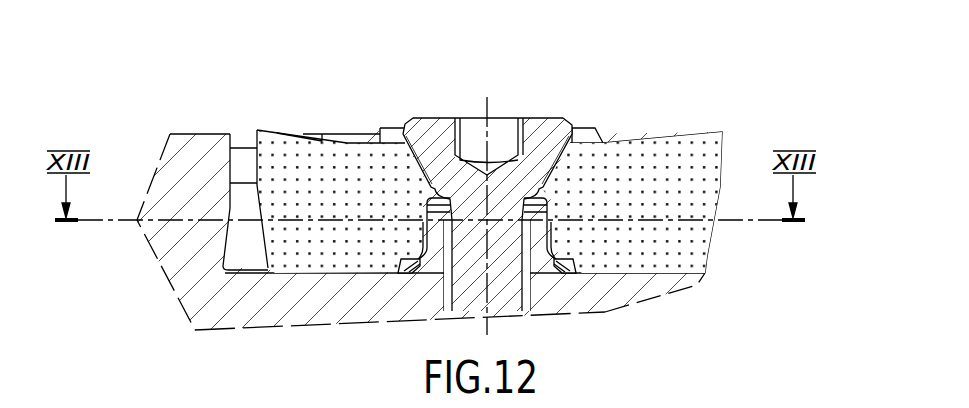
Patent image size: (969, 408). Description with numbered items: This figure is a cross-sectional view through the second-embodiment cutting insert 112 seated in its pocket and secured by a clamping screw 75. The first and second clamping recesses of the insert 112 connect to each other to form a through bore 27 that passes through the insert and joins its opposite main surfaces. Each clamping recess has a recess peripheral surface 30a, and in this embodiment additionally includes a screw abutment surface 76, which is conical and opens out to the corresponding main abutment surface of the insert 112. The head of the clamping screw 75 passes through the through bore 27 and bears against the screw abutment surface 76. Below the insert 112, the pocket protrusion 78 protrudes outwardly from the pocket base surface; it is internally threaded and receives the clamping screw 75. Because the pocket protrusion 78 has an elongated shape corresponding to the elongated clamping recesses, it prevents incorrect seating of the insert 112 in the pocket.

The insert 112 is at (700, 105).
The clamping screw 75 is at (511, 176).
The screw abutment surface 76 is at (412, 142).
The recess peripheral surface 30a is at (548, 162).
The pocket protrusion 78 is at (540, 222).
The through bore 27 is at (527, 222).